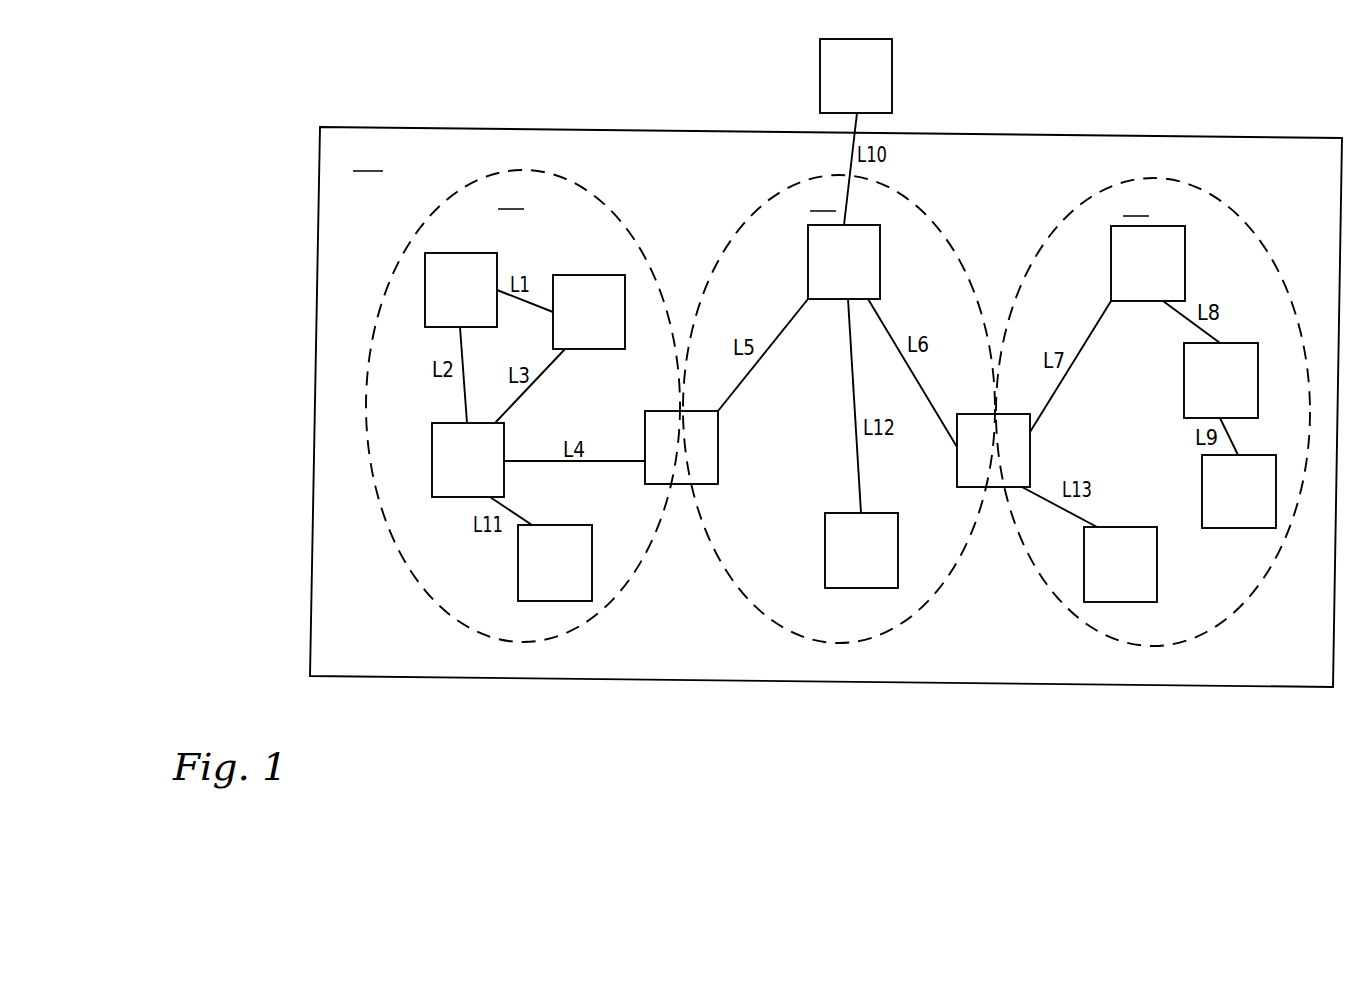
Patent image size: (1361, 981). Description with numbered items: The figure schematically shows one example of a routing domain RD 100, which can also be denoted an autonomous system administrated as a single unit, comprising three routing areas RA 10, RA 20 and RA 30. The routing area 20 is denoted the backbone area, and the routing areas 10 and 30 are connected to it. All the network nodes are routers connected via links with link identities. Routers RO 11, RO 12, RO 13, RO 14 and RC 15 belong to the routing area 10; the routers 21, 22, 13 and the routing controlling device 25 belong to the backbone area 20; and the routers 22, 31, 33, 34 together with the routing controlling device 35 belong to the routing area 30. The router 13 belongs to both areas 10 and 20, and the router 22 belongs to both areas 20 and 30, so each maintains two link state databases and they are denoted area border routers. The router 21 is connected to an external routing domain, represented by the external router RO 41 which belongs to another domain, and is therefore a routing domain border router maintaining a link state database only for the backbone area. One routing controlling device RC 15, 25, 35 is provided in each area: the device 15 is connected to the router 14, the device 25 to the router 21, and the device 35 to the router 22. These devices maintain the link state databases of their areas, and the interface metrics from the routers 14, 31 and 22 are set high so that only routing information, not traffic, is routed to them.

The routing domain 100 is at (320, 192).
The routing area 10 is at (617, 212).
The routing area 20 is at (930, 215).
The routing area 30 is at (1243, 220).
The router 11 is at (480, 252).
The router 12 is at (588, 274).
The router 13 is at (645, 426).
The router 14 is at (432, 437).
The routing controlling device 15 is at (553, 525).
The router 21 is at (807, 267).
The router 22 is at (975, 413).
The routing controlling device 25 is at (825, 550).
The router 31 is at (1185, 263).
The router 33 is at (1184, 380).
The router 34 is at (1237, 529).
The routing controlling device 35 is at (1157, 557).
The external router 41 is at (892, 75).